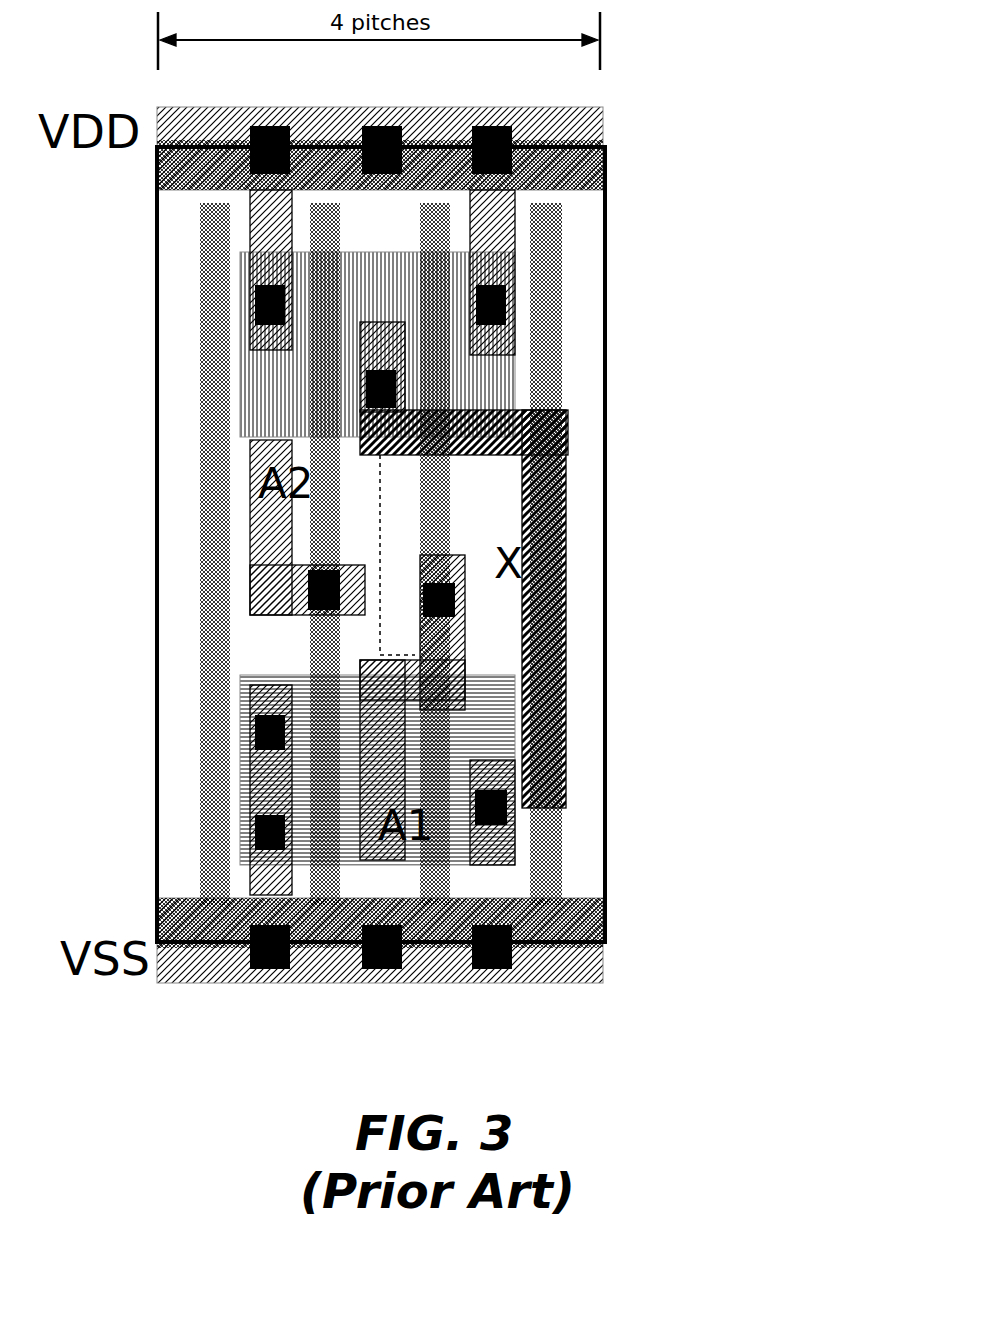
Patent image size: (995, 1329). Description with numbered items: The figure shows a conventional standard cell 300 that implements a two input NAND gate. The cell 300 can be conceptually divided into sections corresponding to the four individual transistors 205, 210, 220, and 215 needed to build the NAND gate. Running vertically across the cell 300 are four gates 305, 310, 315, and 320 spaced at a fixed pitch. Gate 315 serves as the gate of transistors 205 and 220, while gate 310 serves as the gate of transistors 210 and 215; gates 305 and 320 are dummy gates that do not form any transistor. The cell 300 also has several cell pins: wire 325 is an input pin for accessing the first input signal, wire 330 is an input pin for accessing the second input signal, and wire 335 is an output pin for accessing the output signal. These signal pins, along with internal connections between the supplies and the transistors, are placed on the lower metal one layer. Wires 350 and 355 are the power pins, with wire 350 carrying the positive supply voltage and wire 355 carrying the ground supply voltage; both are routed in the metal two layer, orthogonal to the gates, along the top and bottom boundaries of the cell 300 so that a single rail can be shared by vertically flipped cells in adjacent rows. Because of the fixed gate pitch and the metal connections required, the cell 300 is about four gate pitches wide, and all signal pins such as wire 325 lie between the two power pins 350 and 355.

The standard cell 300 is at (155, 247).
The transistor 205 is at (285, 385).
The transistor 210 is at (457, 382).
The transistor 215 is at (452, 750).
The transistor 220 is at (300, 782).
The dummy gate 305 is at (545, 888).
The gate 310 is at (433, 888).
The gate 315 is at (323, 888).
The dummy gate 320 is at (213, 888).
The wire 325 is at (368, 818).
The wire 330 is at (245, 480).
The wire 335 is at (556, 562).
The wire 350 is at (605, 133).
The wire 355 is at (605, 963).